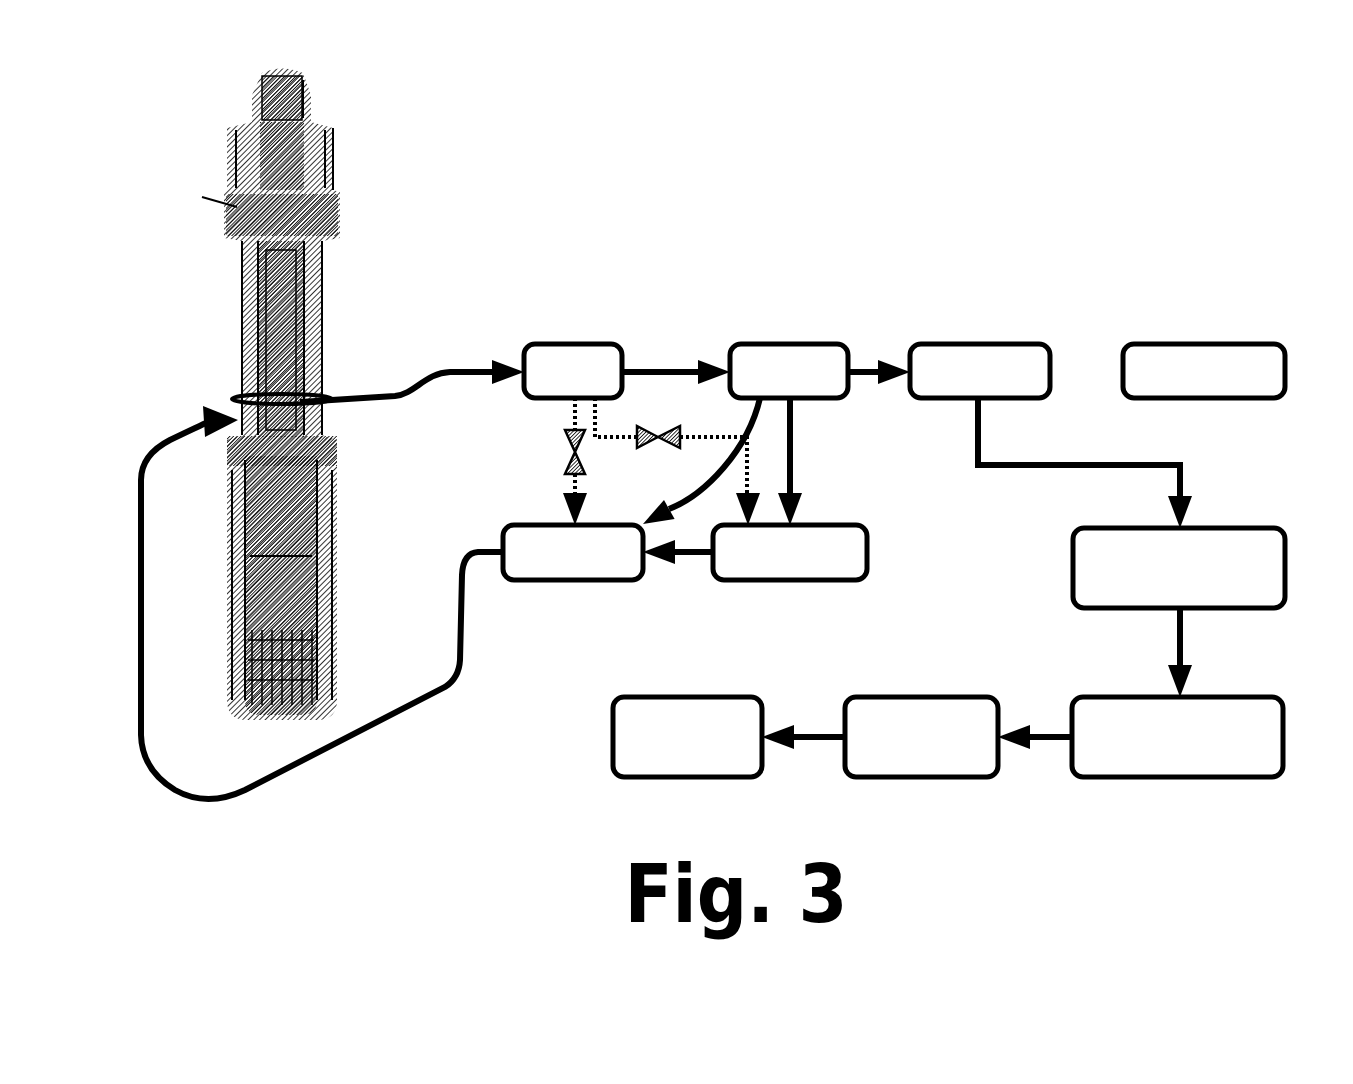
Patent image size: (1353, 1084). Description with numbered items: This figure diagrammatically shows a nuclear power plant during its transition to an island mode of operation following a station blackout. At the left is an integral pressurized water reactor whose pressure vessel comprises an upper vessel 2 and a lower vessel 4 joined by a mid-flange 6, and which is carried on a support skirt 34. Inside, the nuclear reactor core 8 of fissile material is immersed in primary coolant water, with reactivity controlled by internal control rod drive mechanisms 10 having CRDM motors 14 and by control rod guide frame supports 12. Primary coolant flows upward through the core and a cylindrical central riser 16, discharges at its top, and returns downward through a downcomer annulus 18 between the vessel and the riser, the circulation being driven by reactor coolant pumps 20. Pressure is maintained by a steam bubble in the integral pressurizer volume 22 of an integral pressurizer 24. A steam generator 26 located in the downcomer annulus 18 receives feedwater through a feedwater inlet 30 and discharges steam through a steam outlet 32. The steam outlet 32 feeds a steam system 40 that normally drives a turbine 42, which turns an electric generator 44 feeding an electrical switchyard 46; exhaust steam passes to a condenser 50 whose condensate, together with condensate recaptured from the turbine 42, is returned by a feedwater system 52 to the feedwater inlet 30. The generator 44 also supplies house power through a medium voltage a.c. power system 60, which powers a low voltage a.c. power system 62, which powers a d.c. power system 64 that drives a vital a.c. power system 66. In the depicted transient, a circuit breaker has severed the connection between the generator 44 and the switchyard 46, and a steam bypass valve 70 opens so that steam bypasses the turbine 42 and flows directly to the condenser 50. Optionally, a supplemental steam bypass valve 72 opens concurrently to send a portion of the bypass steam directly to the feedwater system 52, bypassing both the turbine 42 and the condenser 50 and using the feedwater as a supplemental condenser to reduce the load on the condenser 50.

The upper vessel 2 is at (317, 325).
The lower vessel 4 is at (327, 632).
The mid-flange 6 is at (333, 462).
The nuclear reactor core 8 is at (240, 658).
The control rod drive mechanisms 10 is at (237, 510).
The control rod guide frame supports 12 is at (263, 577).
The CRDM motors 14 is at (270, 557).
The central riser 16 is at (303, 277).
The downcomer annulus 18 is at (300, 332).
The reactor coolant pumps 20 is at (327, 142).
The integral pressurizer volume 22 is at (263, 103).
The integral pressurizer 24 is at (310, 105).
The steam generator 26 is at (257, 293).
The feedwater inlet 30 is at (238, 412).
The steam outlet 32 is at (238, 390).
The support skirt 34 is at (333, 543).
The steam system 40 is at (580, 343).
The turbine 42 is at (792, 343).
The electric generator 44 is at (980, 343).
The electrical switchyard 46 is at (1202, 343).
The condenser 50 is at (813, 525).
The feedwater system 52 is at (533, 525).
The medium voltage a.c. power system 60 is at (1210, 528).
The low voltage a.c. power system 62 is at (1210, 697).
The d.c. power system 64 is at (925, 697).
The vital a.c. power system 66 is at (688, 697).
The steam bypass valve 70 is at (645, 432).
The supplemental steam bypass valve 72 is at (568, 463).